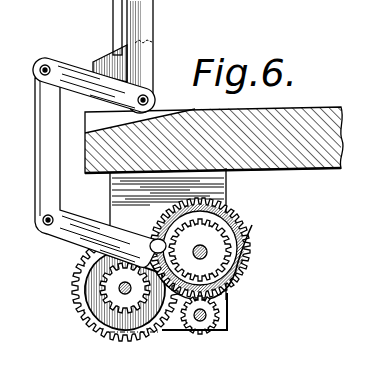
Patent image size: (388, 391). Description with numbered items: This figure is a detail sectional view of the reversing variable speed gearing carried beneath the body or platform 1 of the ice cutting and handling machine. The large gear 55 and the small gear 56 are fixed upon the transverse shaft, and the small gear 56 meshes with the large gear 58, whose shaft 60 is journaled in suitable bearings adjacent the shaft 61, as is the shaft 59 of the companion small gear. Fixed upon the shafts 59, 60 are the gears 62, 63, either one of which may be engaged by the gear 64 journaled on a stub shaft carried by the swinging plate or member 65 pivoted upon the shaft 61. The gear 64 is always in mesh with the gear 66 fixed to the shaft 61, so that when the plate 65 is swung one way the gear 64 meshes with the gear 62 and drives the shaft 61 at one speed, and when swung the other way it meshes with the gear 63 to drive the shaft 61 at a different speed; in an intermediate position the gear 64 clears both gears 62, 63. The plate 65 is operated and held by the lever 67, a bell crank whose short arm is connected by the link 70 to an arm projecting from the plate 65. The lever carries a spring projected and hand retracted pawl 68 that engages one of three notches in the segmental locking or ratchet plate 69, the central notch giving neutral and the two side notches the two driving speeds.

The body or platform 1 is at (325, 162).
The large gear 55 is at (251, 245).
The small gear 56 is at (244, 228).
The large gear 58 is at (118, 325).
The shaft 59 is at (200, 328).
The shaft 60 is at (117, 285).
The shaft 61 is at (231, 220).
The gear 62 is at (212, 330).
The gear 63 is at (117, 300).
The gear 64 is at (162, 330).
The swinging plate or member 65 is at (160, 243).
The gear 66 is at (249, 270).
The lever 67 is at (145, 10).
The pawl 68 is at (113, 13).
The segmental locking or ratchet plate 69 is at (108, 60).
The link 70 is at (43, 168).